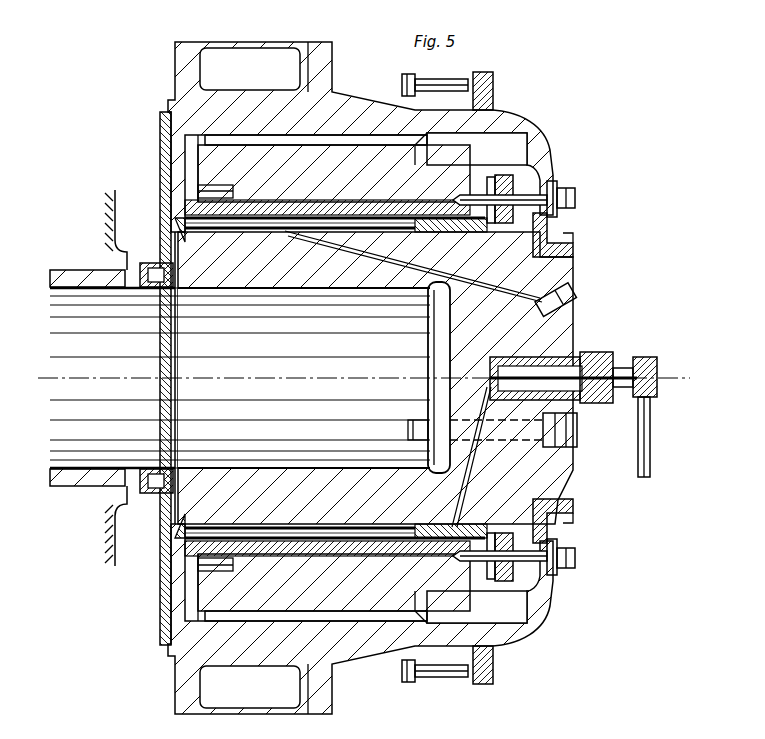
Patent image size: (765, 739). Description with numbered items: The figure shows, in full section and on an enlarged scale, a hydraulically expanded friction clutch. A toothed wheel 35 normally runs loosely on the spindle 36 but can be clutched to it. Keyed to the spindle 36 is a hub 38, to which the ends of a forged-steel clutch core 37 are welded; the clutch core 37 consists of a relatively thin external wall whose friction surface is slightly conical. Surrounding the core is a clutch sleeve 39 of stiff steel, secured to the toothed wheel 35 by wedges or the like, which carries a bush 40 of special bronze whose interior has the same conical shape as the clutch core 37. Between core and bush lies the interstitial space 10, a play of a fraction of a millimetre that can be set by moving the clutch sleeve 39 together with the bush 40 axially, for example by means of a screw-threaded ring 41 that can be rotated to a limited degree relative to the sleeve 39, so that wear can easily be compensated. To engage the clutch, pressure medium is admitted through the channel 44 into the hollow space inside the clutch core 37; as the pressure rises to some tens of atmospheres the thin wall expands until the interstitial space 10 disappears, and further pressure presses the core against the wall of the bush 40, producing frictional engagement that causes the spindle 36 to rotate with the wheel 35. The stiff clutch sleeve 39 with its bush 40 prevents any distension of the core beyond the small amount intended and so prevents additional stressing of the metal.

The interstitial space 10 is at (178, 213).
The toothed wheel 35 is at (190, 82).
The spindle 36 is at (69, 430).
The clutch core 37 is at (323, 230).
The hub 38 is at (374, 378).
The clutch sleeve 39 is at (208, 155).
The bush 40 is at (300, 201).
The screw-threaded ring 41 is at (553, 225).
The channel 44 is at (488, 392).